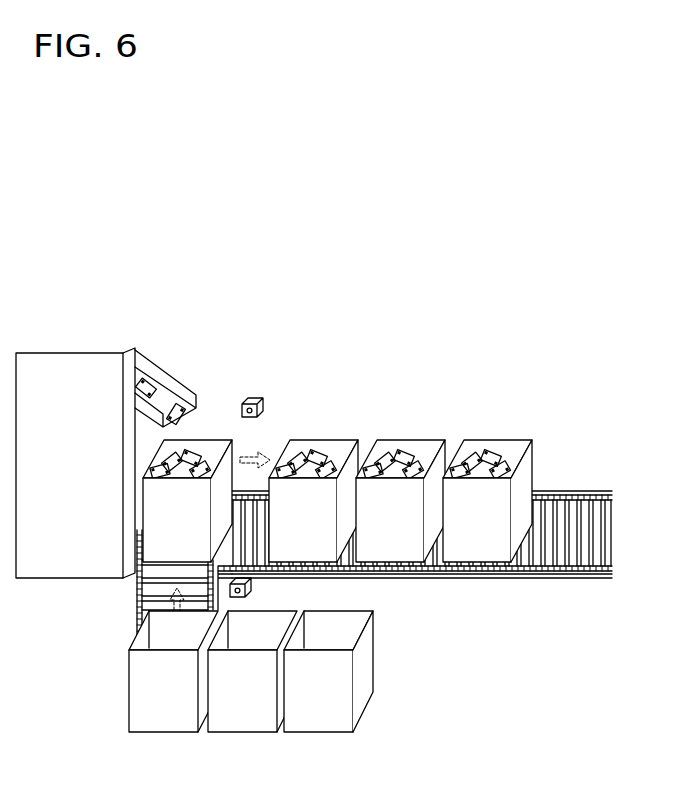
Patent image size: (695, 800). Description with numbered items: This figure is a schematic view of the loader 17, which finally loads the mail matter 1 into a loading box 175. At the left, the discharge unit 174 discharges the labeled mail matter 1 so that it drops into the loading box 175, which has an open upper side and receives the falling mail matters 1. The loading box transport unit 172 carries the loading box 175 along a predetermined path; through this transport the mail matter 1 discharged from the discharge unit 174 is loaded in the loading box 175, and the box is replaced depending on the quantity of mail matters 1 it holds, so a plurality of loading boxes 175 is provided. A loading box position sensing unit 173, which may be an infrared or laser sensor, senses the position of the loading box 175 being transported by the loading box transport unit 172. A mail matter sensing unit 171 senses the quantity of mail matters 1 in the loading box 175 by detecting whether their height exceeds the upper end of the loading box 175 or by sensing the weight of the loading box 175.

The loader 17 is at (338, 270).
The mail matter 1 is at (165, 402).
The mail matter sensing unit 171 is at (258, 397).
The loading box transport unit 172 is at (140, 598).
The loading box position sensing unit 173 is at (250, 585).
The discharge unit 174 is at (64, 356).
The loading box 175 is at (233, 450).